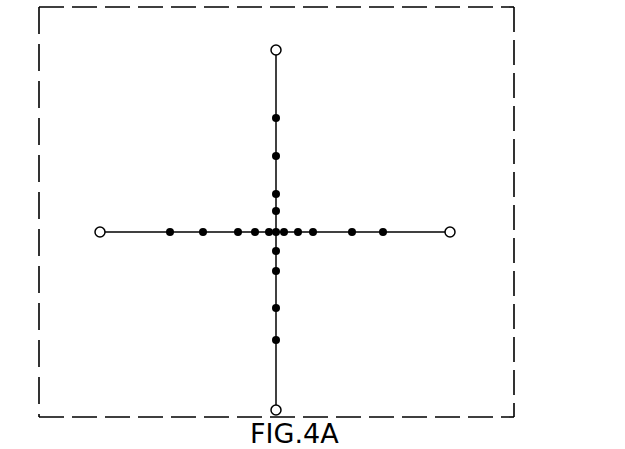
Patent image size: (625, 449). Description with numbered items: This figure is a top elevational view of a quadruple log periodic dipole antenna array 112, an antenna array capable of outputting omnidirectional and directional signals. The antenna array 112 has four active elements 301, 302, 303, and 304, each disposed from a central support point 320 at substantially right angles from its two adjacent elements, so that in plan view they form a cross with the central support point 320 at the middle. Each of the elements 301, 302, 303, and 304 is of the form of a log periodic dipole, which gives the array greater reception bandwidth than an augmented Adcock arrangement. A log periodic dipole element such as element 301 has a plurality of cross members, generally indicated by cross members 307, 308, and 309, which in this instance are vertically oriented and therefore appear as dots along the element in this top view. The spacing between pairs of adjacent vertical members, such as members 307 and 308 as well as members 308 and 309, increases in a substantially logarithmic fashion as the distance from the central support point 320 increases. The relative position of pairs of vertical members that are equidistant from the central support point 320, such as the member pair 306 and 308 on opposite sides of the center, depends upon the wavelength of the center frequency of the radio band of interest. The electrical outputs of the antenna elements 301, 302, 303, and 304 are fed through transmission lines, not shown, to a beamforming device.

The antenna array 112 is at (514, 70).
The active element 301 is at (454, 228).
The active element 302 is at (280, 407).
The active element 303 is at (104, 228).
The active element 304 is at (280, 46).
The vertical member 306 is at (204, 228).
The cross member 307 is at (314, 235).
The cross member 308 is at (352, 228).
The cross member 309 is at (384, 236).
The central support point 320 is at (279, 229).